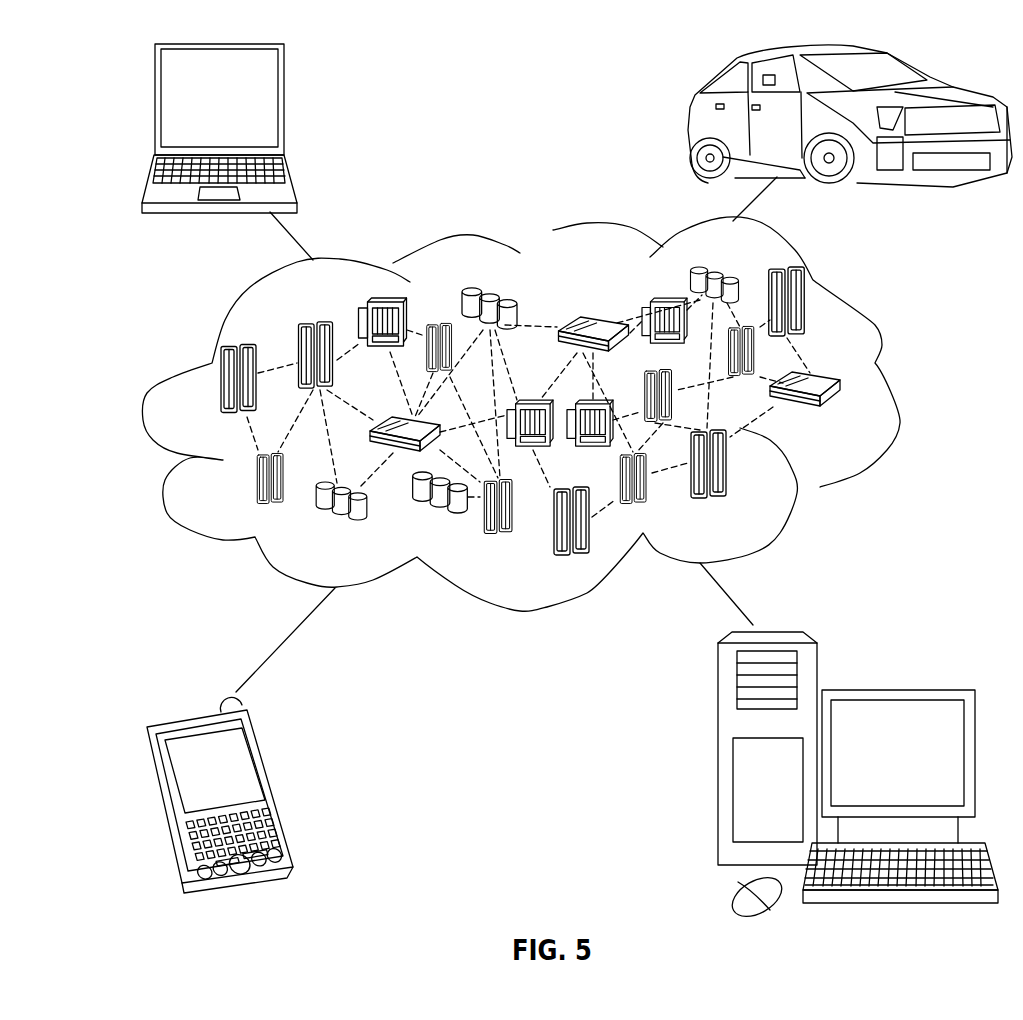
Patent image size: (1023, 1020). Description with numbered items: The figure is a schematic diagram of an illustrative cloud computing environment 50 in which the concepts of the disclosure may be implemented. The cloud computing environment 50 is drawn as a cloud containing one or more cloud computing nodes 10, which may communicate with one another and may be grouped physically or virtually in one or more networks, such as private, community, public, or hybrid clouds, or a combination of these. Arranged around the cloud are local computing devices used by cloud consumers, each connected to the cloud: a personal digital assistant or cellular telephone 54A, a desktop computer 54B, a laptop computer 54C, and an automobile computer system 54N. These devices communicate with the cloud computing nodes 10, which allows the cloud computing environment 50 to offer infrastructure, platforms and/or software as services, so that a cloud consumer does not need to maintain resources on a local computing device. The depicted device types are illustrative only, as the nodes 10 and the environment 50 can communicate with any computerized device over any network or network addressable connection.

The cloud computing environment 50 is at (898, 390).
The cloud computing nodes 10 is at (855, 428).
The personal digital assistant or cellular telephone 54A is at (273, 787).
The desktop computer 54B is at (893, 688).
The laptop computer 54C is at (285, 107).
The automobile computer system 54N is at (693, 120).